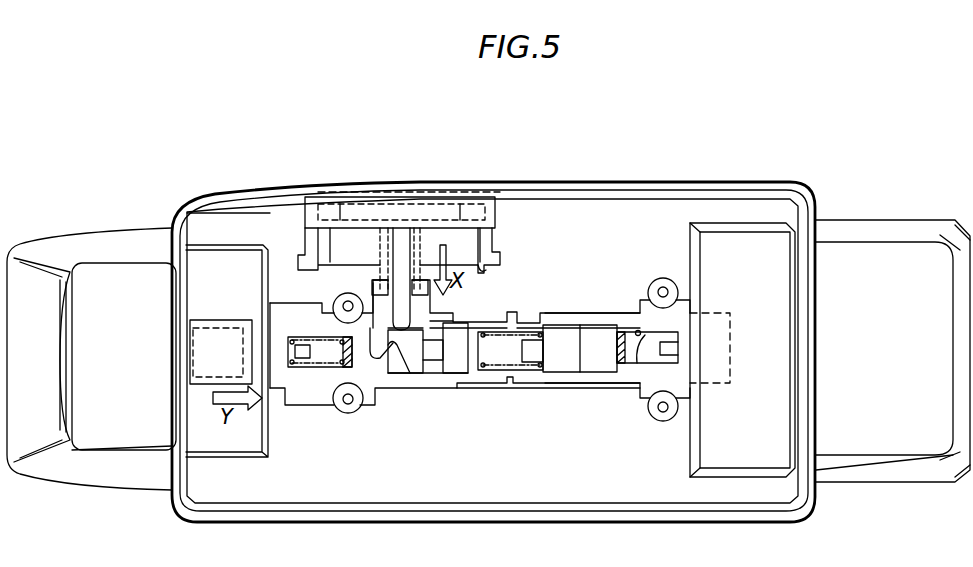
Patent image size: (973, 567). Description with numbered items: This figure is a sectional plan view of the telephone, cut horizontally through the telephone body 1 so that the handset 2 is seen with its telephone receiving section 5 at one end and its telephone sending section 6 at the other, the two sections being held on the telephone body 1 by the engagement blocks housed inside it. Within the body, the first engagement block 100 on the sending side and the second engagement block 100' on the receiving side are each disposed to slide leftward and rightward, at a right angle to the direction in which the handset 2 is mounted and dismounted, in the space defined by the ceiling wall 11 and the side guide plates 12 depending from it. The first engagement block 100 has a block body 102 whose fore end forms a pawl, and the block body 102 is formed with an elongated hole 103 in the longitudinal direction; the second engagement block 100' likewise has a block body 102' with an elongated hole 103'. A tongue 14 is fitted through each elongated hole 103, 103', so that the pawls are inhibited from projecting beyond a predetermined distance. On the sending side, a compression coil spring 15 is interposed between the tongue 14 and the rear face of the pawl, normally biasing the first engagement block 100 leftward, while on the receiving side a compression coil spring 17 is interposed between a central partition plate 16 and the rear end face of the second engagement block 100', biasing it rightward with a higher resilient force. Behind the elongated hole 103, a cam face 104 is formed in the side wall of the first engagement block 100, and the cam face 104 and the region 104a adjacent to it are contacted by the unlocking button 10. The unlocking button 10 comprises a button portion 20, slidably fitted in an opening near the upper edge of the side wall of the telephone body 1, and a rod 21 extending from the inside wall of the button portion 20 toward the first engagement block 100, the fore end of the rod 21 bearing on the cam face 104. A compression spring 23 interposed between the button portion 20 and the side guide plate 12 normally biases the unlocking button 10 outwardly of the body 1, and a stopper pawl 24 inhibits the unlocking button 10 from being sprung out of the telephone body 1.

The telephone body 1 is at (812, 180).
The handset 2 is at (932, 214).
The telephone receiving section 5 is at (800, 350).
The telephone sending section 6 is at (91, 359).
The unlocking button 10 is at (453, 187).
The ceiling wall 11 is at (480, 365).
The side guide plates 12 is at (606, 312).
The tongue 14 is at (360, 363).
The compression coil spring 15 is at (300, 367).
The central partition plate 16 is at (470, 350).
The compression coil spring 17 is at (530, 367).
The button portion 20 is at (458, 237).
The rod 21 is at (393, 242).
The compression spring 23 is at (382, 257).
The stopper pawl 24 is at (484, 268).
The first engagement block 100 is at (434, 405).
The second engagement block 100' is at (592, 290).
The block body 102 is at (415, 375).
The block body 102' is at (554, 305).
The elongated hole 103 is at (324, 395).
The elongated hole 103' is at (647, 300).
The cam face 104 is at (370, 332).
The latch tongue 104a is at (387, 340).